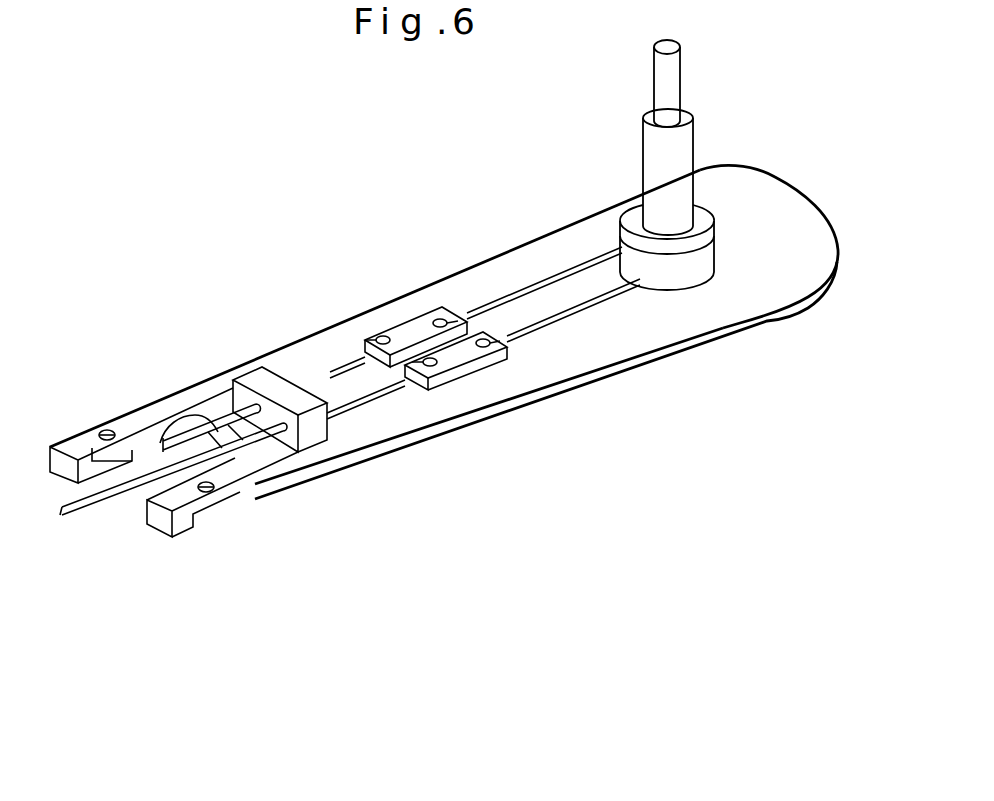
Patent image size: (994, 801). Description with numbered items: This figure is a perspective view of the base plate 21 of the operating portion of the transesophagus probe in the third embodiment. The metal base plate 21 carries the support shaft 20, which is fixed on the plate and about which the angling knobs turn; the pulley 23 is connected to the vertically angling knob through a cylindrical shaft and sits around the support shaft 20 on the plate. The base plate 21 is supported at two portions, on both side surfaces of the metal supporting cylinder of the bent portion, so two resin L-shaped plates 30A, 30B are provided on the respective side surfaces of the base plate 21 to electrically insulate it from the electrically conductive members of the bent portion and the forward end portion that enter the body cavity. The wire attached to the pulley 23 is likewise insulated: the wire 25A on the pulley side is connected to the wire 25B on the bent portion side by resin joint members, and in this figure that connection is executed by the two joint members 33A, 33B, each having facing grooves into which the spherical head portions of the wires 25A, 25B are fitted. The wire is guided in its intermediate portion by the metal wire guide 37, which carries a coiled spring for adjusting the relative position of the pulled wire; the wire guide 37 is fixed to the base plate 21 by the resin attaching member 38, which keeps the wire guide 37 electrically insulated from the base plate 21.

The support shaft 20 is at (681, 72).
The base plate 21 is at (457, 418).
The pulley 23 is at (700, 223).
The wire 25A is at (605, 263).
The wire 25B is at (352, 364).
The L-shaped plate 30A is at (213, 511).
The L-shaped plate 30B is at (60, 445).
The joint member 33A is at (495, 358).
The joint member 33B is at (412, 328).
The wire guide 37 is at (222, 418).
The attaching member 38 is at (273, 388).